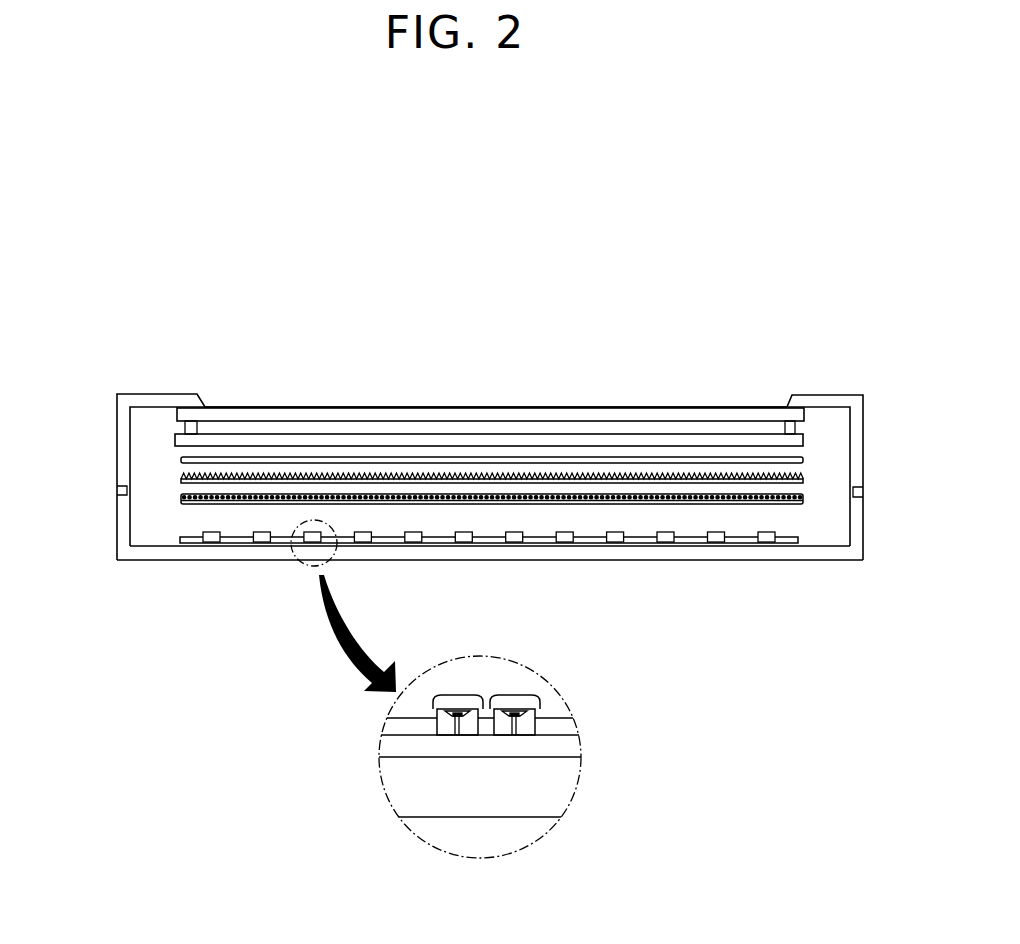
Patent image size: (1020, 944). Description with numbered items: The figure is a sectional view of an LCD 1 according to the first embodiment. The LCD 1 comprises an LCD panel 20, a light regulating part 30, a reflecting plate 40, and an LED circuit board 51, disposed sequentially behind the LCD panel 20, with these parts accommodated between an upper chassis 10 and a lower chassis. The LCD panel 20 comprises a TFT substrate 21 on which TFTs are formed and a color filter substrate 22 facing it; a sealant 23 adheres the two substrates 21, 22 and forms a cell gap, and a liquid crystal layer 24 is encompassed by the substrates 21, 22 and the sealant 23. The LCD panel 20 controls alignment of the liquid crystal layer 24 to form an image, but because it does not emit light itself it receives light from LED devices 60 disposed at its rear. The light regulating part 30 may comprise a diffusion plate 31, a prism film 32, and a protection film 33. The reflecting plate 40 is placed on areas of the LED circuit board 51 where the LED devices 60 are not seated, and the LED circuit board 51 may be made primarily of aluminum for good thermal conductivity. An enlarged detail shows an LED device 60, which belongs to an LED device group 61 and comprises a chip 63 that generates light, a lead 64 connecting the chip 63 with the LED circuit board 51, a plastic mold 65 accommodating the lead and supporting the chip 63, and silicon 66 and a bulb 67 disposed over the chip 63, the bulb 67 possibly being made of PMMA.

The LCD 1 is at (110, 311).
The upper chassis 10 is at (806, 396).
The LCD panel 20 is at (489, 370).
The TFT substrate 21 is at (541, 437).
The color filter substrate 22 is at (613, 412).
The sealant 23 is at (782, 423).
The liquid crystal layer 24 is at (547, 330).
The light regulating part 30 is at (417, 495).
The diffusion plate 31 is at (175, 505).
The prism film 32 is at (175, 483).
The protection film 33 is at (175, 466).
The reflecting plate 40 is at (570, 727).
The LED circuit board 51 is at (582, 748).
The LED device 60 is at (515, 654).
The LED device group 61 is at (212, 545).
The chip 63 is at (504, 711).
The lead 64 is at (533, 672).
The plastic mold 65 is at (472, 706).
The silicon 66 is at (492, 723).
The bulb 67 is at (517, 727).